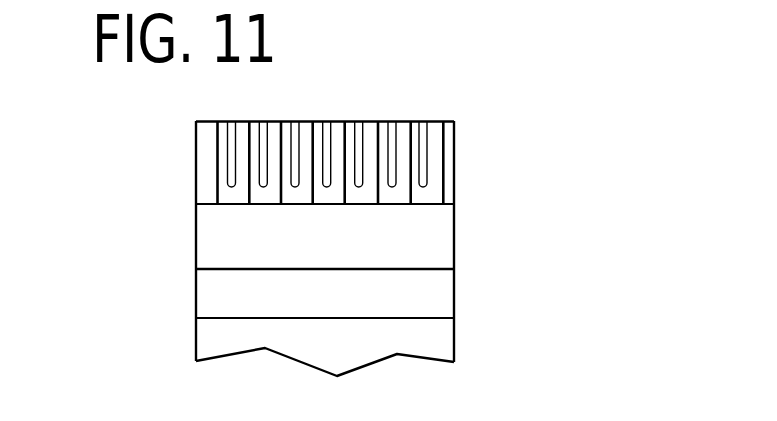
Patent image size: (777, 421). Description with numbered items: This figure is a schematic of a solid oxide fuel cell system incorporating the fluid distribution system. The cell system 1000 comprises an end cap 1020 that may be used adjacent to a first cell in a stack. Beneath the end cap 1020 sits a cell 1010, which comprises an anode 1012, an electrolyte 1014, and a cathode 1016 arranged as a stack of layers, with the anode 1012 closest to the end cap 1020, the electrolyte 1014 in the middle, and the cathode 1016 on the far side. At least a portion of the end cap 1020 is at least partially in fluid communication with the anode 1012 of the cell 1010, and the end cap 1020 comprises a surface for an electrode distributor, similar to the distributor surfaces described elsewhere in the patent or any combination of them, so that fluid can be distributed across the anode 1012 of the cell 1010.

The cell system 1000 is at (368, 106).
The cell 1010 is at (485, 205).
The anode 1012 is at (195, 237).
The electrolyte 1014 is at (195, 292).
The cathode 1016 is at (195, 345).
The end cap 1020 is at (455, 157).